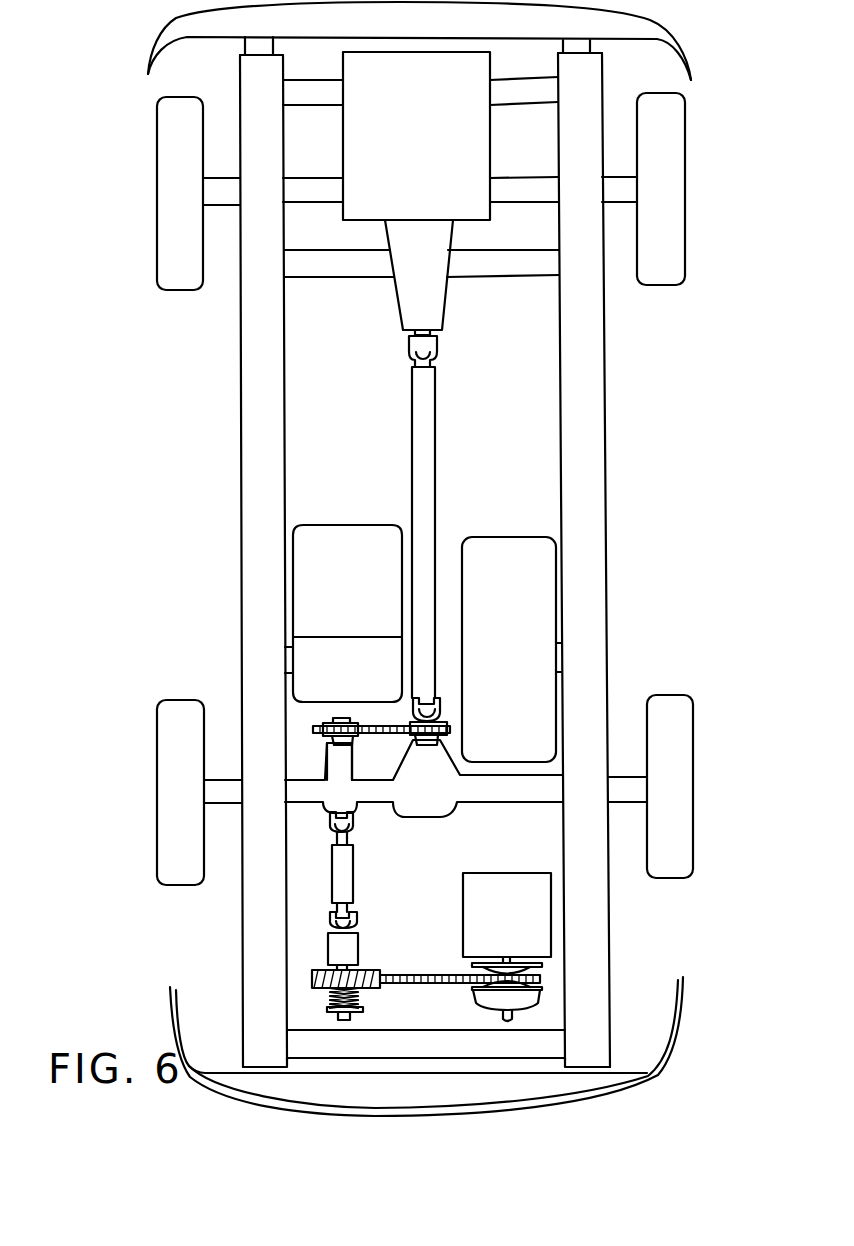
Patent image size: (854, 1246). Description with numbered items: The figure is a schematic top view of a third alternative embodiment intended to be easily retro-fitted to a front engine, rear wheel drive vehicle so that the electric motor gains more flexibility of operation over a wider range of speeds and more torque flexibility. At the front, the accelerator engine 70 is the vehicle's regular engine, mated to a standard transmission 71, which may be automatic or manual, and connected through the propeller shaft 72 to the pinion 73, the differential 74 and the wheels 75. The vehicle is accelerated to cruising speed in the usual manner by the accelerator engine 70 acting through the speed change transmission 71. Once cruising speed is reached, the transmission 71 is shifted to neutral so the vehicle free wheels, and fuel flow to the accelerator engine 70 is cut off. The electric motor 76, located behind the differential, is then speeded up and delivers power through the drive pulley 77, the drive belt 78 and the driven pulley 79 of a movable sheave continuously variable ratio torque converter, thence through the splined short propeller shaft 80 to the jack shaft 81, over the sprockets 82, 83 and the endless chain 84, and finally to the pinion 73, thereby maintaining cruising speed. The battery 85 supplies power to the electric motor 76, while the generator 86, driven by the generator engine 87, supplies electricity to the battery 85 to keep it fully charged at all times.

The accelerator engine 70 is at (427, 144).
The transmission 71 is at (433, 272).
The propeller shaft 72 is at (435, 447).
The pinion 73 is at (447, 718).
The differential 74 is at (435, 799).
The wheels 75 is at (158, 730).
The electric motor 76 is at (513, 932).
The drive pulley 77 is at (542, 999).
The drive belt 78 is at (430, 983).
The driven pulley 79 is at (317, 990).
The splined short propeller shaft 80 is at (355, 872).
The jack shaft 81 is at (333, 718).
The sprocket 82 is at (326, 738).
The sprocket 83 is at (410, 740).
The endless chain 84 is at (392, 726).
The battery 85 is at (520, 647).
The generator 86 is at (357, 687).
The generator engine 87 is at (357, 605).